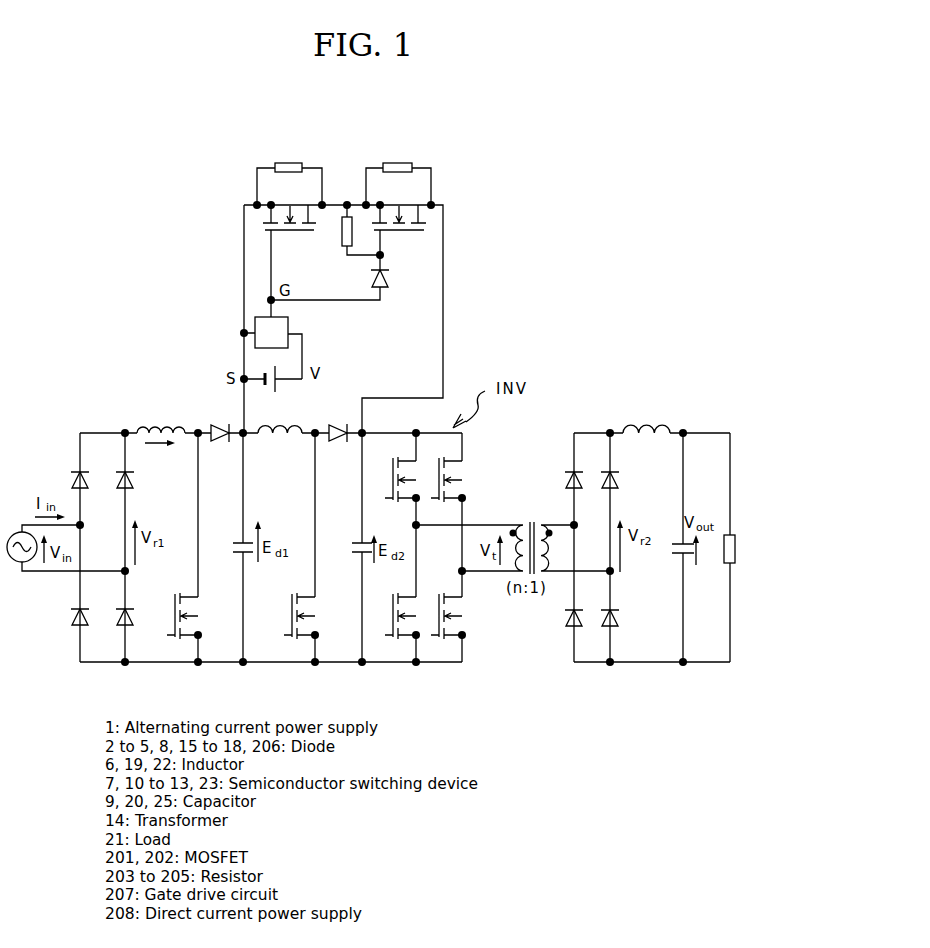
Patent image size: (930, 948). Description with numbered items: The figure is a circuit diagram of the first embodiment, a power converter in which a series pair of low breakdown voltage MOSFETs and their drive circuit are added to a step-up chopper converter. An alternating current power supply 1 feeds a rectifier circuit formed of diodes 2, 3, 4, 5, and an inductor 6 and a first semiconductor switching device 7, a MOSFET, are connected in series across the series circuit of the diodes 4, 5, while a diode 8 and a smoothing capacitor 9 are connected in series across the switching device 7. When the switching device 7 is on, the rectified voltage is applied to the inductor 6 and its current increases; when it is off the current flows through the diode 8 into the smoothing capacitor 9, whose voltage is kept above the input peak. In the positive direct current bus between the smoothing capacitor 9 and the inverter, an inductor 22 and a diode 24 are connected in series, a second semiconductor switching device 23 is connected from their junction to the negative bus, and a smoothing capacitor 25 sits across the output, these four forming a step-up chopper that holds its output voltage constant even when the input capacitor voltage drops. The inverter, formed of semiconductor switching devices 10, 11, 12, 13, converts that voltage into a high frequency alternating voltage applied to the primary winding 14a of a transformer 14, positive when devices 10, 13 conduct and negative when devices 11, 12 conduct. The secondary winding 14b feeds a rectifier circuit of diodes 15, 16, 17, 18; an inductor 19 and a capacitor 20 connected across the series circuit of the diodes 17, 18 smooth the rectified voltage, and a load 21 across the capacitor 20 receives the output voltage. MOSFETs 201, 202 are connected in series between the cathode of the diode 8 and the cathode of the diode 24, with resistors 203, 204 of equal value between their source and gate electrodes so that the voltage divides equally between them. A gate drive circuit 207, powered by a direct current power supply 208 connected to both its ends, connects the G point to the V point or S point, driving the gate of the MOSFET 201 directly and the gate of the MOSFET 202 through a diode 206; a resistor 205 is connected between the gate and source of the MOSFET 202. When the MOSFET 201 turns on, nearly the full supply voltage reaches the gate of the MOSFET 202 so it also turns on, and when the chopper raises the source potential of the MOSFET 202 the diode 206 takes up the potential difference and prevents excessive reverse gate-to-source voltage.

The alternating current power supply 1 is at (17, 531).
The diode 2 is at (75, 463).
The diode 3 is at (75, 603).
The diode 4 is at (118, 463).
The diode 5 is at (120, 600).
The inductor 6 is at (160, 426).
The semiconductor switching device 7 is at (185, 586).
The diode 8 is at (212, 424).
The smoothing capacitor 9 is at (235, 539).
The semiconductor switching device 10 is at (400, 460).
The semiconductor switching device 11 is at (400, 597).
The semiconductor switching device 12 is at (448, 460).
The semiconductor switching device 13 is at (446, 598).
The transformer 14 is at (513, 519).
The primary winding 14a is at (508, 524).
The secondary winding 14b is at (545, 525).
The diode 15 is at (570, 470).
The diode 16 is at (560, 616).
The diode 17 is at (606, 470).
The diode 18 is at (620, 620).
The inductor 19 is at (648, 426).
The capacitor 20 is at (677, 536).
The load 21 is at (735, 534).
The inductor 22 is at (285, 425).
The semiconductor switching device 23 is at (290, 600).
The diode 24 is at (343, 446).
The smoothing capacitor 25 is at (352, 538).
The MOSFET 201 is at (262, 228).
The MOSFET 202 is at (425, 228).
The resistor 203 is at (285, 163).
The resistor 204 is at (398, 163).
The resistor 205 is at (343, 238).
The diode 206 is at (392, 283).
The gate drive circuit 207 is at (292, 326).
The direct current power supply 208 is at (280, 390).